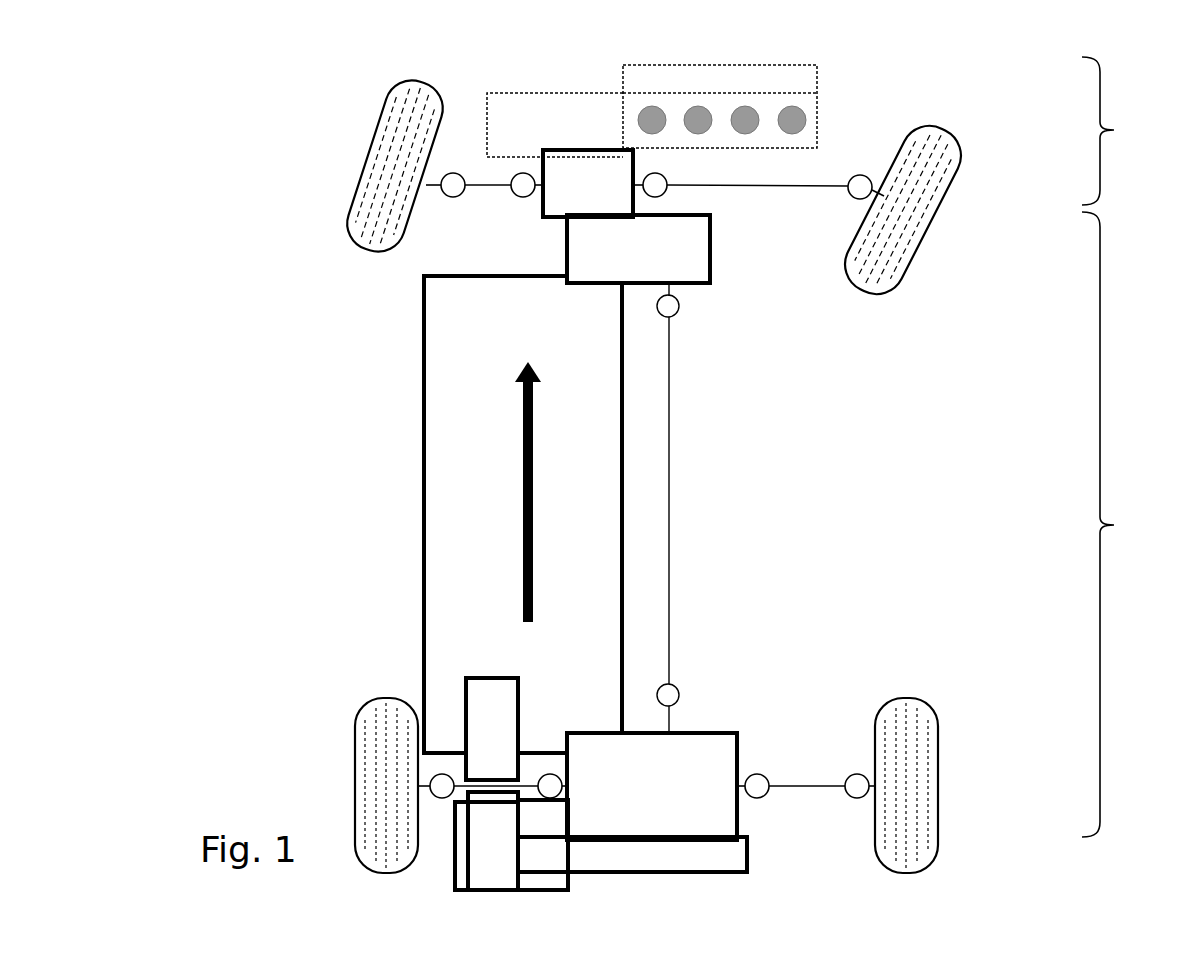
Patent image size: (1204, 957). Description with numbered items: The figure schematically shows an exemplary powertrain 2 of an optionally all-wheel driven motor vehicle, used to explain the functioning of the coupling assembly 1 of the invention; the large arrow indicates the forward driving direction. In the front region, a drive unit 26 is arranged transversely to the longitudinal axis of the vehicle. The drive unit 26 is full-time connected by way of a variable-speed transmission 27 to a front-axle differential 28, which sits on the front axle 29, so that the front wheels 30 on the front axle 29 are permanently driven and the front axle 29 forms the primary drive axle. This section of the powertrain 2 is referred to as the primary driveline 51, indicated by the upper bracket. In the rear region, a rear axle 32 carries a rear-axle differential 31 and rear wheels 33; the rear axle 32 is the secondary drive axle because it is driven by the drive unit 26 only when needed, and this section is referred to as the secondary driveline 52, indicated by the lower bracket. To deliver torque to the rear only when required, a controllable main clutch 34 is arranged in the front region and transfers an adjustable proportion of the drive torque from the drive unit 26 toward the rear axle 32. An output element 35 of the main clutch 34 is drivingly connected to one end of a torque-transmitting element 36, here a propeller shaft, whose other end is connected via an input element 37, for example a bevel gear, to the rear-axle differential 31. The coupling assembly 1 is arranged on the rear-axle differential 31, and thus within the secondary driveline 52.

The coupling assembly 1 is at (662, 765).
The powertrain 2 is at (268, 186).
The drive unit 26 is at (803, 118).
The variable-speed transmission 27 is at (523, 131).
The front-axle differential 28 is at (588, 183).
The front axle 29 is at (830, 185).
The front wheels 30 is at (393, 163).
The rear-axle differential 31 is at (680, 763).
The rear axle 32 is at (827, 783).
The rear wheels 33 is at (382, 775).
The main clutch 34 is at (607, 253).
The output element 35 is at (681, 293).
The torque-transmitting element 36 is at (669, 545).
The input element 37 is at (673, 712).
The primary driveline 51 is at (1120, 131).
The secondary driveline 52 is at (1120, 524).